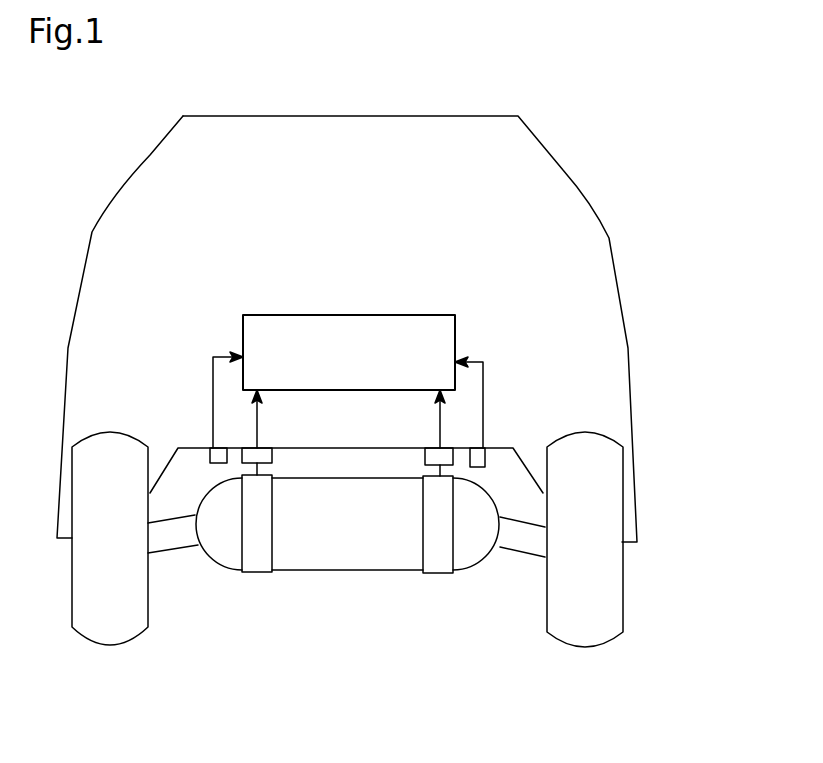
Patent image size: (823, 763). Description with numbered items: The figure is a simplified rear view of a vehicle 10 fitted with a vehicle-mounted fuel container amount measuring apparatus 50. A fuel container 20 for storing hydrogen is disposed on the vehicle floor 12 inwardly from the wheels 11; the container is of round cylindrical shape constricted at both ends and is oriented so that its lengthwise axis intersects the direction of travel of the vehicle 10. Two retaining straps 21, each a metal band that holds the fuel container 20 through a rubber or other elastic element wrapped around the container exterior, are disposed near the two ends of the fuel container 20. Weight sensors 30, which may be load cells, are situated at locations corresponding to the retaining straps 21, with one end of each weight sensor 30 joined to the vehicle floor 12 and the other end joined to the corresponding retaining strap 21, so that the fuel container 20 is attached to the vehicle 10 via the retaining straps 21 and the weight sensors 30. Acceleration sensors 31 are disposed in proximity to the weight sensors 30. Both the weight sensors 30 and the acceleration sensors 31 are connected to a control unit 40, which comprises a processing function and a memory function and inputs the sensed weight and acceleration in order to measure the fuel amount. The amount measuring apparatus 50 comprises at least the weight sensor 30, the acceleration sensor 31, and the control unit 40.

The vehicle 10 is at (627, 292).
The wheels 11 is at (117, 618).
The vehicle floor 12 is at (203, 447).
The fuel container 20 is at (338, 557).
The retaining strap 21 is at (258, 557).
The weight sensor 30 is at (263, 455).
The acceleration sensor 31 is at (210, 458).
The control unit 40 is at (349, 352).
The amount measuring apparatus 50 is at (470, 312).